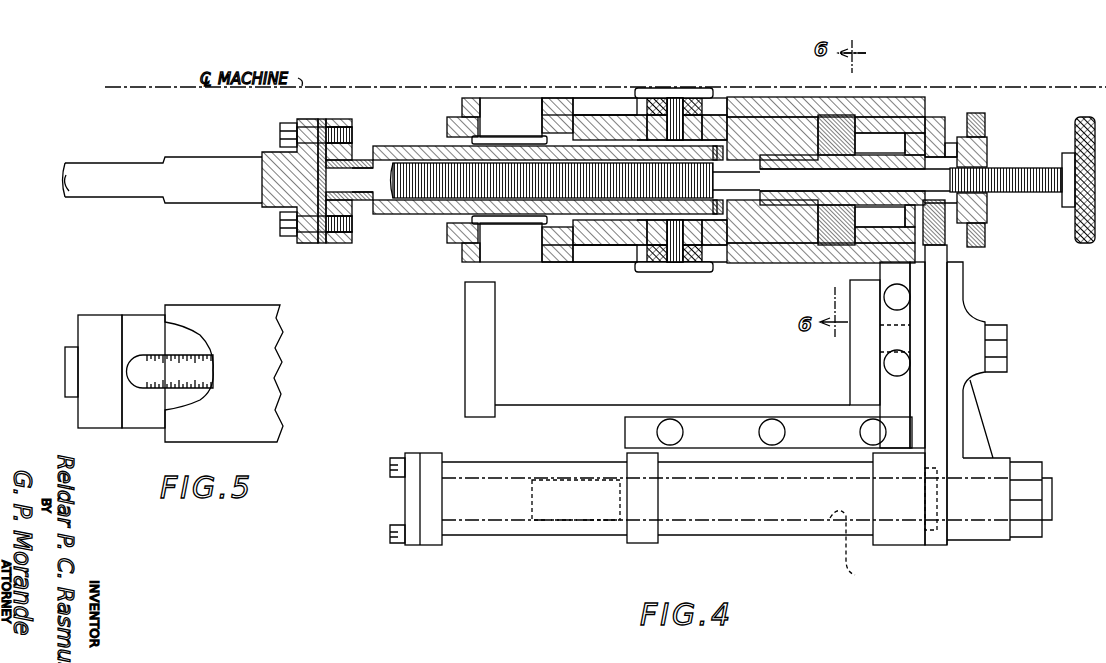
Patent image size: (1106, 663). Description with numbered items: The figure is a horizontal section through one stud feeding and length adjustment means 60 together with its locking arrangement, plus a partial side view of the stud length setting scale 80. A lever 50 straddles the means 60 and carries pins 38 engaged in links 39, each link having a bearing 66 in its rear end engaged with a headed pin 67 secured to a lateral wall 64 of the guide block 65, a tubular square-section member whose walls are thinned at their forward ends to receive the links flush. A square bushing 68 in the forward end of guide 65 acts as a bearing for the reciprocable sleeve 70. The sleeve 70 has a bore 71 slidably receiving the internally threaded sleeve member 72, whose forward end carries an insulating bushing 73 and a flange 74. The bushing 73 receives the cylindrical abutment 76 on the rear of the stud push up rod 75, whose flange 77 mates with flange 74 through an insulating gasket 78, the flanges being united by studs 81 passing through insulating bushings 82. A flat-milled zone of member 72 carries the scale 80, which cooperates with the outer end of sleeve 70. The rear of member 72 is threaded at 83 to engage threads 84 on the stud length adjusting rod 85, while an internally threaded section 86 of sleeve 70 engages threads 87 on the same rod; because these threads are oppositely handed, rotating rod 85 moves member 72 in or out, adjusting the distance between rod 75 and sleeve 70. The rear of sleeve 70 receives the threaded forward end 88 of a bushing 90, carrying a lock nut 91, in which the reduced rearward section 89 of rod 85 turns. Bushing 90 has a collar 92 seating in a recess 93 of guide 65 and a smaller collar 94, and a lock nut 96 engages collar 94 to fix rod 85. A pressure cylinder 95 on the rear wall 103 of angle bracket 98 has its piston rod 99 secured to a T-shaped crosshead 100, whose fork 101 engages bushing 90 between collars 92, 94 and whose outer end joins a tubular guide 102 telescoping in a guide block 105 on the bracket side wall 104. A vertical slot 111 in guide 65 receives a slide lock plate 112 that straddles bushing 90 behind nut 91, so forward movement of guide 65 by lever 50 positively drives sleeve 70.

In FIG. 4, the pin 38 is at (512, 98).
In FIG. 4, the link 39 is at (470, 99).
In FIG. 4, the lever 50 is at (450, 123).
In FIG. 4, the stud feeding and length adjustment means 60 is at (1012, 298).
In FIG. 4, the lateral wall 64 is at (890, 110).
In FIG. 4, the guide block 65 is at (765, 130).
In FIG. 4, the bearing 66 is at (655, 105).
In FIG. 4, the headed pin 67 is at (672, 90).
In FIG. 4, the bushing 68 is at (740, 215).
In FIG. 4, the sleeve 70 is at (627, 215).
In FIG. 5, the sleeve 70 is at (258, 434).
In FIG. 4, the bore 71 is at (565, 160).
In FIG. 4, the sleeve member 72 is at (568, 215).
In FIG. 5, the sleeve member 72 is at (150, 418).
In FIG. 4, the insulating bushing 73 is at (365, 200).
In FIG. 4, the flange 74 is at (340, 244).
In FIG. 5, the flange 74 is at (103, 418).
In FIG. 4, the stud push up rod 75 is at (163, 161).
In FIG. 4, the cylindrical abutment 76 is at (337, 172).
In FIG. 5, the cylindrical abutment 76 is at (68, 371).
In FIG. 4, the flange 77 is at (310, 243).
In FIG. 4, the insulating gasket 78 is at (322, 245).
In FIG. 5, the stud length setting scale 80 is at (155, 358).
In FIG. 4, the stud 81 is at (280, 134).
In FIG. 4, the insulating bushing 82 is at (303, 119).
In FIG. 4, the internal thread 83 is at (402, 163).
In FIG. 4, the thread 84 is at (490, 168).
In FIG. 4, the stud length adjusting rod 85 is at (950, 150).
In FIG. 4, the internally threaded section 86 is at (720, 163).
In FIG. 4, the thread 87 is at (612, 165).
In FIG. 4, the threaded forward end 88 is at (822, 172).
In FIG. 4, the reduced rearward section 89 is at (917, 180).
In FIG. 4, the bushing 90 is at (835, 250).
In FIG. 4, the lock nut 91 is at (800, 245).
In FIG. 4, the circular collar 92 is at (940, 232).
In FIG. 4, the recess 93 is at (935, 140).
In FIG. 4, the circular collar 94 is at (970, 150).
In FIG. 4, the pressure cylinder 95 is at (507, 352).
In FIG. 4, the lock nut 96 is at (975, 200).
In FIG. 4, the angle bracket 98 is at (625, 432).
In FIG. 4, the piston rod 99 is at (915, 372).
In FIG. 4, the crosshead 100 is at (970, 400).
In FIG. 4, the fork 101 is at (975, 124).
In FIG. 4, the tubular guide 102 is at (863, 549).
In FIG. 4, the rear wall 103 is at (852, 363).
In FIG. 4, the side wall 104 is at (738, 417).
In FIG. 4, the guide block 105 is at (792, 525).
In FIG. 4, the vertical slot 111 is at (835, 125).
In FIG. 4, the slide lock plate 112 is at (855, 145).